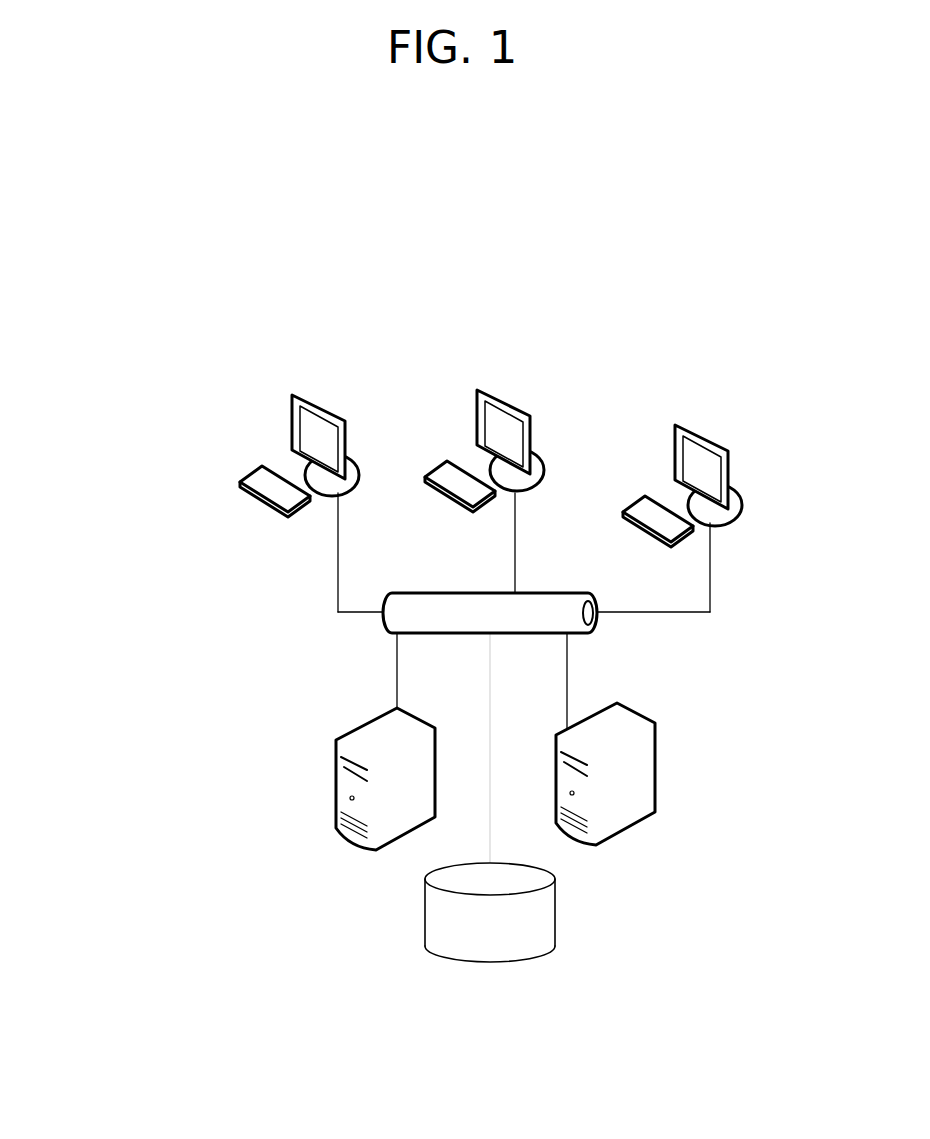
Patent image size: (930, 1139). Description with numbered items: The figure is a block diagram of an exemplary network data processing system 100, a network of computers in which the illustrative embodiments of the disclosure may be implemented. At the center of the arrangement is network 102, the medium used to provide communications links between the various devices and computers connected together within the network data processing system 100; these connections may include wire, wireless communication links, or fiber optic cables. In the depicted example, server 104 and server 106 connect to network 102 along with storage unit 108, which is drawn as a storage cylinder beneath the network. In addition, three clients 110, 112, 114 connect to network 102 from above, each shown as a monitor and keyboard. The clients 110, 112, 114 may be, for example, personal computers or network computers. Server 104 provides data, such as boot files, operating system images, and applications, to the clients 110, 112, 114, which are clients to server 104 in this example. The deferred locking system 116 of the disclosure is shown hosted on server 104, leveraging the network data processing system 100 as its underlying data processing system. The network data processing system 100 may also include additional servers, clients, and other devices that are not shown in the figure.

The network data processing system 100 is at (104, 203).
The network 102 is at (524, 685).
The server 104 is at (655, 756).
The server 106 is at (336, 778).
The storage unit 108 is at (423, 913).
The client 110 is at (310, 392).
The client 112 is at (508, 395).
The client 114 is at (680, 422).
The deferred locking system 116 is at (708, 820).